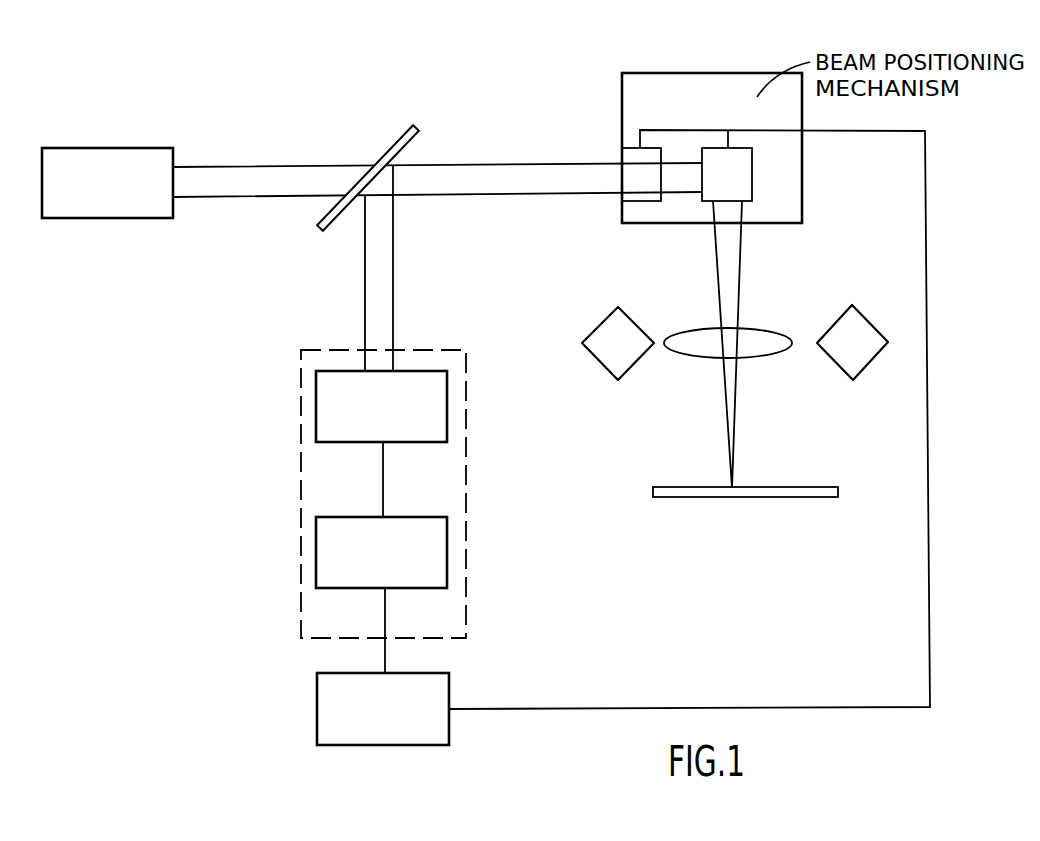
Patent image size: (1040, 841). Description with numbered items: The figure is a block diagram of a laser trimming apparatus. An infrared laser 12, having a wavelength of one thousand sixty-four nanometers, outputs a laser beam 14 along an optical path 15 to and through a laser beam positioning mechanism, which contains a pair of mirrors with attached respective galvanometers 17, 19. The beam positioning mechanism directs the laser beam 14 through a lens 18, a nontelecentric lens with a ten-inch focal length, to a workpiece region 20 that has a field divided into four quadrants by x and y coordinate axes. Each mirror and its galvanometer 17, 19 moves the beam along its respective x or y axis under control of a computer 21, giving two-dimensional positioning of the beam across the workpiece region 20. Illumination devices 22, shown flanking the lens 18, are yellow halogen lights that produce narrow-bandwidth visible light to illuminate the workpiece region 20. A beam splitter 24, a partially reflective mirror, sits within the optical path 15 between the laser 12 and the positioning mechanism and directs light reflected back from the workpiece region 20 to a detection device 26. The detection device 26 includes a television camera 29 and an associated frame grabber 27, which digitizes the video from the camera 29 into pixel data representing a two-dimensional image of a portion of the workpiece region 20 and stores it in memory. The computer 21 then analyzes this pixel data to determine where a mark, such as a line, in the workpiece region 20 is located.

The infrared laser 12 is at (148, 147).
The laser beam 14 is at (263, 165).
The optical path 15 is at (517, 162).
The mirror and galvanometer 17 is at (640, 201).
The lens 18 is at (757, 328).
The mirror and galvanometer 19 is at (708, 201).
The workpiece region 20 is at (793, 487).
The computer 21 is at (450, 677).
The illumination devices 22 is at (602, 322).
The beam splitter 24 is at (406, 133).
The detection device 26 is at (300, 390).
The frame grabber 27 is at (448, 550).
The television camera 29 is at (447, 388).